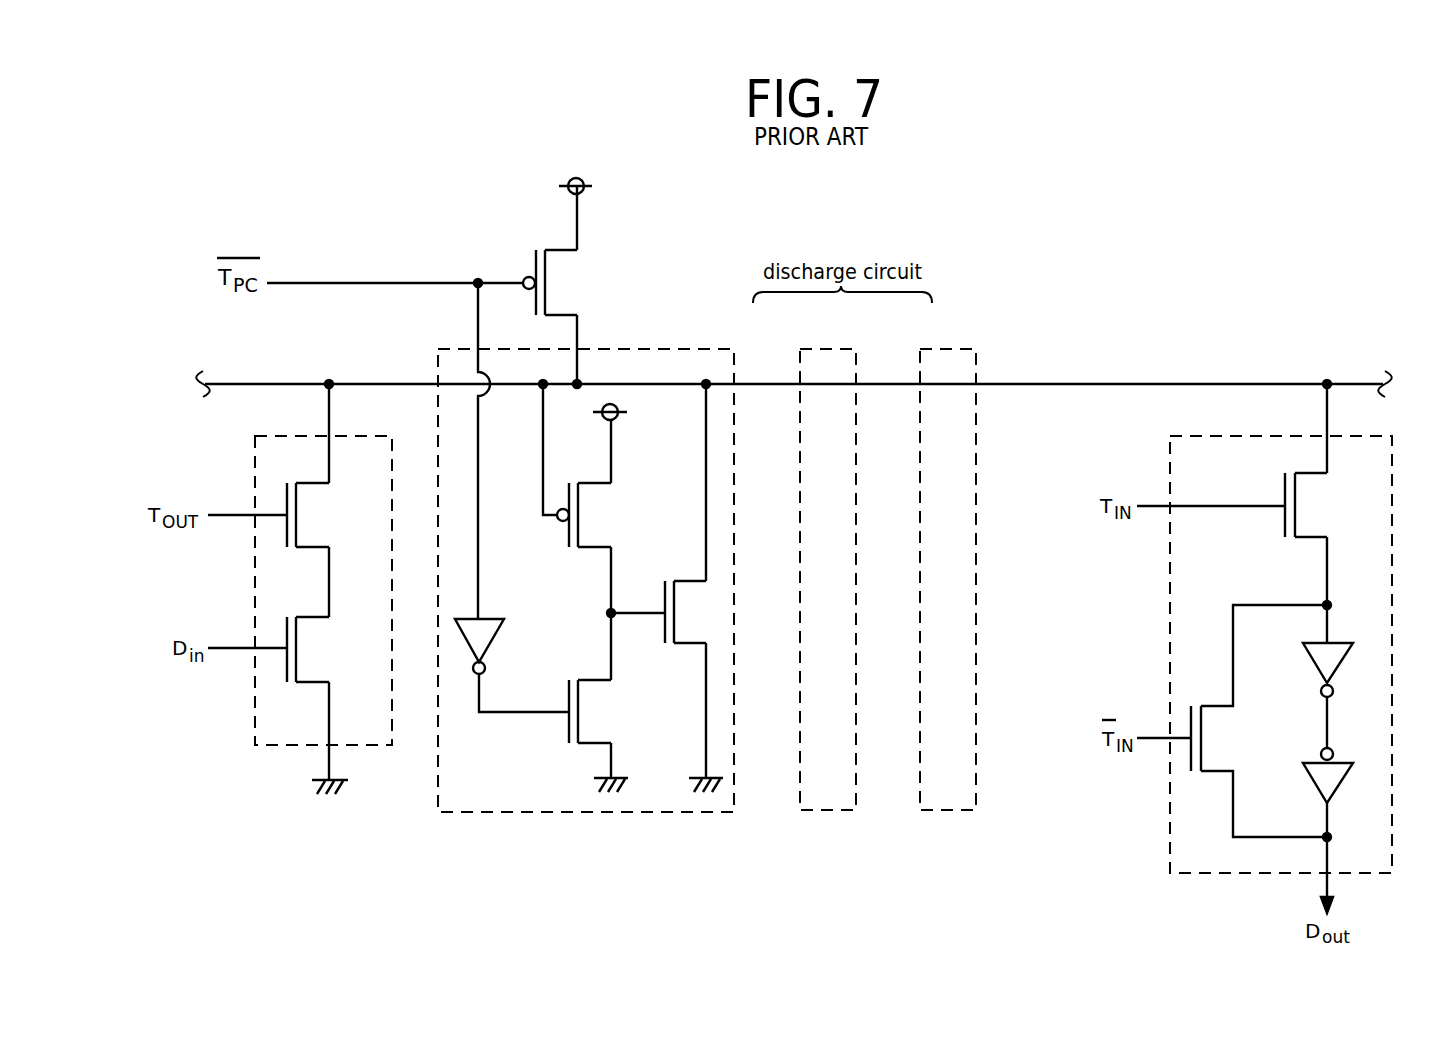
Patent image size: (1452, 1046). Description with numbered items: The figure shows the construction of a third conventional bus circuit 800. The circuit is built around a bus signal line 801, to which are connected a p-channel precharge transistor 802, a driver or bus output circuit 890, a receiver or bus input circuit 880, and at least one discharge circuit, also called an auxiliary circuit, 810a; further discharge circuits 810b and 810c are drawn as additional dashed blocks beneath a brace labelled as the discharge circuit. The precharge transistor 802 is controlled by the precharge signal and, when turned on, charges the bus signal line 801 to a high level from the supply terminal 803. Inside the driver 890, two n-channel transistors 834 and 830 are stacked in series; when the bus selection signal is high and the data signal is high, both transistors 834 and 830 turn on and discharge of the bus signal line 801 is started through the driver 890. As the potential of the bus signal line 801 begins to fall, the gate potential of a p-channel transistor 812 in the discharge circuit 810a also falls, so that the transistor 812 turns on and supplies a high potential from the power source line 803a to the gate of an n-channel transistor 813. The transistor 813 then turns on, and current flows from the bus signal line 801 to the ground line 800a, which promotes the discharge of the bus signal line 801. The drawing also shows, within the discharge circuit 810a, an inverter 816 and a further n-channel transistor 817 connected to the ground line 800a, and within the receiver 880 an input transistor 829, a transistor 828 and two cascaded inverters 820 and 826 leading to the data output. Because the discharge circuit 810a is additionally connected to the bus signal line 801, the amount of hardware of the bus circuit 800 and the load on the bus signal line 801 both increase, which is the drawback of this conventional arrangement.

The third conventional bus circuit 800 is at (318, 780).
The ground line 800a is at (700, 784).
The bus signal line 801 is at (1357, 384).
The p-channel precharge transistor 802 is at (534, 260).
The supply voltage terminal 803 is at (586, 175).
The power source line 803a is at (657, 420).
The discharge circuit 810a is at (705, 349).
The discharge circuit block 810b is at (848, 349).
The discharge circuit block 810c is at (968, 349).
The p-channel transistor 812 is at (596, 500).
The n-channel transistor 813 is at (664, 589).
The inverter 816 is at (490, 640).
The NMOS transistor 817 is at (598, 702).
The inverter 820 is at (1342, 640).
The inverter 826 is at (1342, 756).
The NMOS transistor 828 is at (1205, 701).
The NMOS transistor 829 is at (1284, 483).
The n-channel transistor 830 is at (316, 651).
The n-channel transistor 834 is at (316, 516).
The receiver 880 is at (1367, 437).
The driver 890 is at (255, 462).